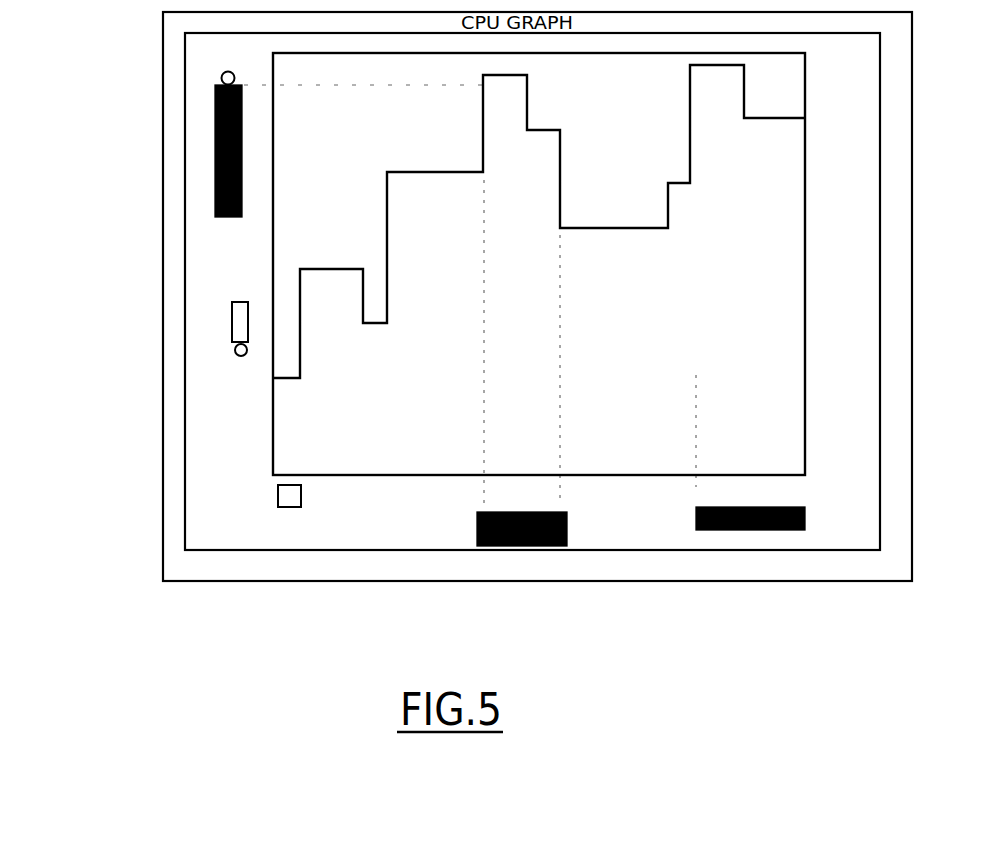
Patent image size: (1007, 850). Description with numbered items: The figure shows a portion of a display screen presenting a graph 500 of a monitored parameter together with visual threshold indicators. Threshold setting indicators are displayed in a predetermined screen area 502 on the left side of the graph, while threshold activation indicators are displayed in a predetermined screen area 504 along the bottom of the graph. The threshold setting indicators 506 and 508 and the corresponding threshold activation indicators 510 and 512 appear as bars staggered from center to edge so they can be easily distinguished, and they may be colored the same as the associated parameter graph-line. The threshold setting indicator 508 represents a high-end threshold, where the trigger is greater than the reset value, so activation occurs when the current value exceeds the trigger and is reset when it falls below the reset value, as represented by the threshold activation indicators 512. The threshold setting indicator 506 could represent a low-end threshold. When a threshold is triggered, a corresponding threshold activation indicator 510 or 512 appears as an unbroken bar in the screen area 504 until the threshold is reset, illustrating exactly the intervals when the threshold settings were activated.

The graph 500 is at (652, 132).
The predetermined screen area 502 is at (130, 261).
The predetermined screen area 504 is at (504, 568).
The threshold setting indicator 506 is at (221, 347).
The threshold setting indicator 508 is at (223, 219).
The threshold activation indicator 510 is at (271, 497).
The threshold activation indicator 512 is at (474, 528).